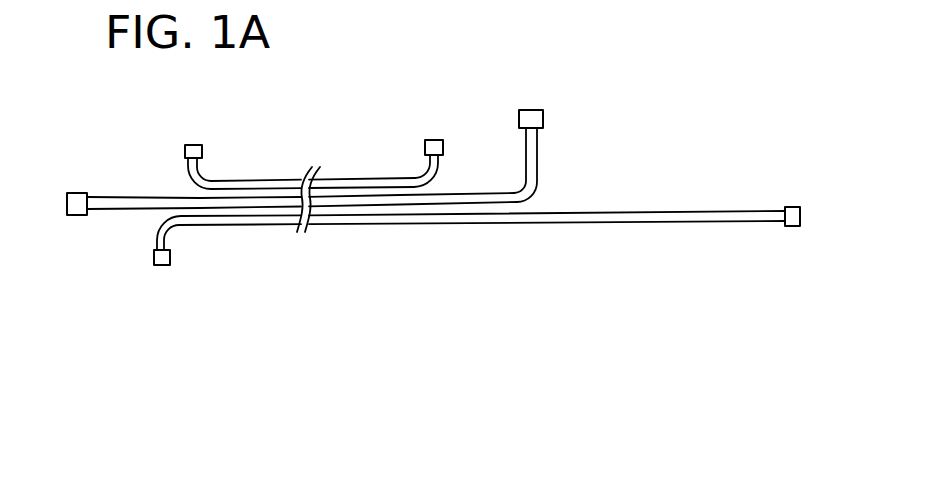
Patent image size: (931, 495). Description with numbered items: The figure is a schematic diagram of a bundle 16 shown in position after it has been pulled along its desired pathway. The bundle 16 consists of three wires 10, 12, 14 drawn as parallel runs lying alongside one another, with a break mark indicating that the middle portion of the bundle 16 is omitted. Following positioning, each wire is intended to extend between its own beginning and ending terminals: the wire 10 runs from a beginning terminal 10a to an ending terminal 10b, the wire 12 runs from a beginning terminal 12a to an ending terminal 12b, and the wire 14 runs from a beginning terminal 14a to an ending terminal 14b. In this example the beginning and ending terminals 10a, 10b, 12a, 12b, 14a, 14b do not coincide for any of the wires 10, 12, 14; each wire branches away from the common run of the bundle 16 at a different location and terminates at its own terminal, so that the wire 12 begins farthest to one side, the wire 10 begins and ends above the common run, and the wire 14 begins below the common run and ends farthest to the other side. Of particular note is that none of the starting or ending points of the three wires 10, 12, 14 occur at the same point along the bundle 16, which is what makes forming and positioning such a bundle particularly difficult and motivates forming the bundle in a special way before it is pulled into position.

The wire 10 is at (228, 180).
The beginning terminal 10a is at (197, 145).
The ending terminal 10b is at (432, 140).
The wire 12 is at (166, 197).
The beginning terminal 12a is at (77, 193).
The ending terminal 12b is at (528, 110).
The wire 14 is at (233, 225).
The beginning terminal 14a is at (163, 265).
The ending terminal 14b is at (800, 213).
The bundle 16 is at (436, 207).